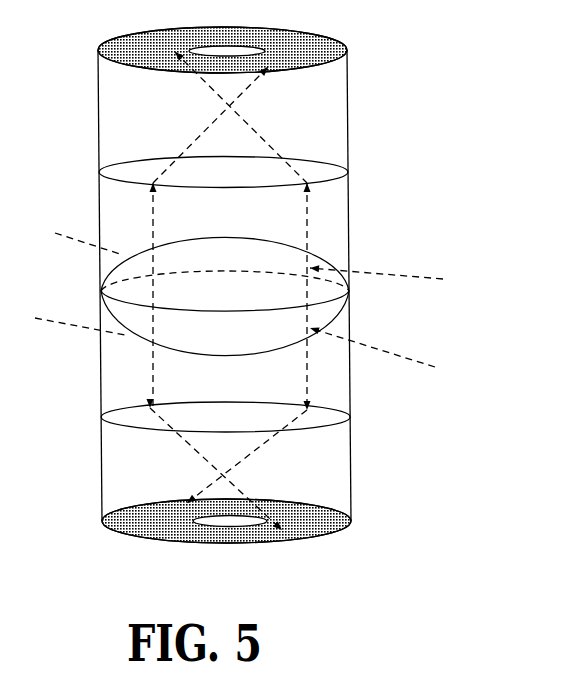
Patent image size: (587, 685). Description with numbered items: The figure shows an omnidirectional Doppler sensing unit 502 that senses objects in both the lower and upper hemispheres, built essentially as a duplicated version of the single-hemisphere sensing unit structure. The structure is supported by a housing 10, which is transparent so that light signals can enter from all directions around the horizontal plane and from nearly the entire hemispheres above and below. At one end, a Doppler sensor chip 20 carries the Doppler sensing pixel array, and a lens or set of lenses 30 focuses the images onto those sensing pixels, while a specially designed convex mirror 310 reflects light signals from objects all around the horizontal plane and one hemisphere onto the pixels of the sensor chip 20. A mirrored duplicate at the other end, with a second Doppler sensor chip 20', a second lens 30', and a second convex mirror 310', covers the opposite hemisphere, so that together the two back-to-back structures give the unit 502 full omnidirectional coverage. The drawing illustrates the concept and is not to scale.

The housing 10 is at (353, 470).
The Doppler sensor chip 20 is at (249, 533).
The Doppler sensor chip 20' is at (246, 42).
The lens 30 is at (249, 407).
The lens 30' is at (250, 161).
The convex mirror 310 is at (257, 296).
The convex mirror 310' is at (251, 261).
The omnidirectional Doppler sensing unit 502 is at (467, 492).